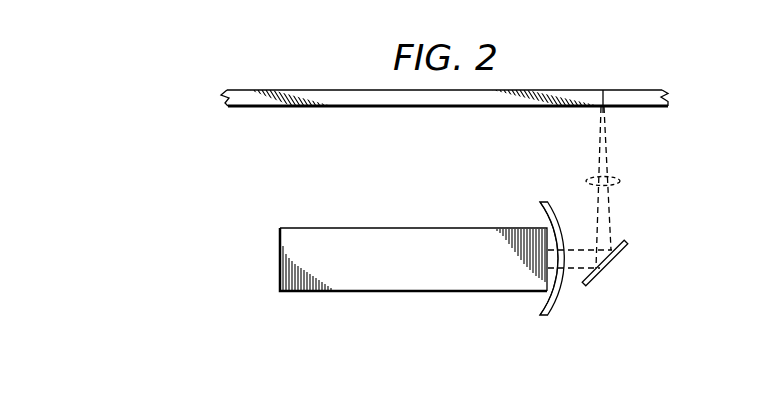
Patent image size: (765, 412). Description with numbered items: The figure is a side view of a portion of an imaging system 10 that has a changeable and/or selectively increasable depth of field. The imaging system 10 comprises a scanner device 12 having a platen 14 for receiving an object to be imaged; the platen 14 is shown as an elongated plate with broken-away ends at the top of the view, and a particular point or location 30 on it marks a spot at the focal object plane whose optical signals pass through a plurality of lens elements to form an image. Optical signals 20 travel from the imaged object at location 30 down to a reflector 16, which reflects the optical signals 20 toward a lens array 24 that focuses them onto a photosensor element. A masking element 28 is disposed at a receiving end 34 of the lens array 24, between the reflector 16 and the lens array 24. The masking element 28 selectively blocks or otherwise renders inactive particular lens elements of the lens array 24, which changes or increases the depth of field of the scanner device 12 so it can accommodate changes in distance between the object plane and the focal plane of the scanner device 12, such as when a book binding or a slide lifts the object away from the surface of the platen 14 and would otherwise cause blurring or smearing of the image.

The imaging system 10 is at (126, 133).
The scanner device 12 is at (235, 198).
The platen 14 is at (319, 90).
The reflector 16 is at (607, 269).
The optical signal 20 is at (621, 181).
The lens array 24 is at (404, 292).
The masking element 28 is at (559, 302).
The location 30 is at (603, 90).
The receiving end 34 is at (536, 220).